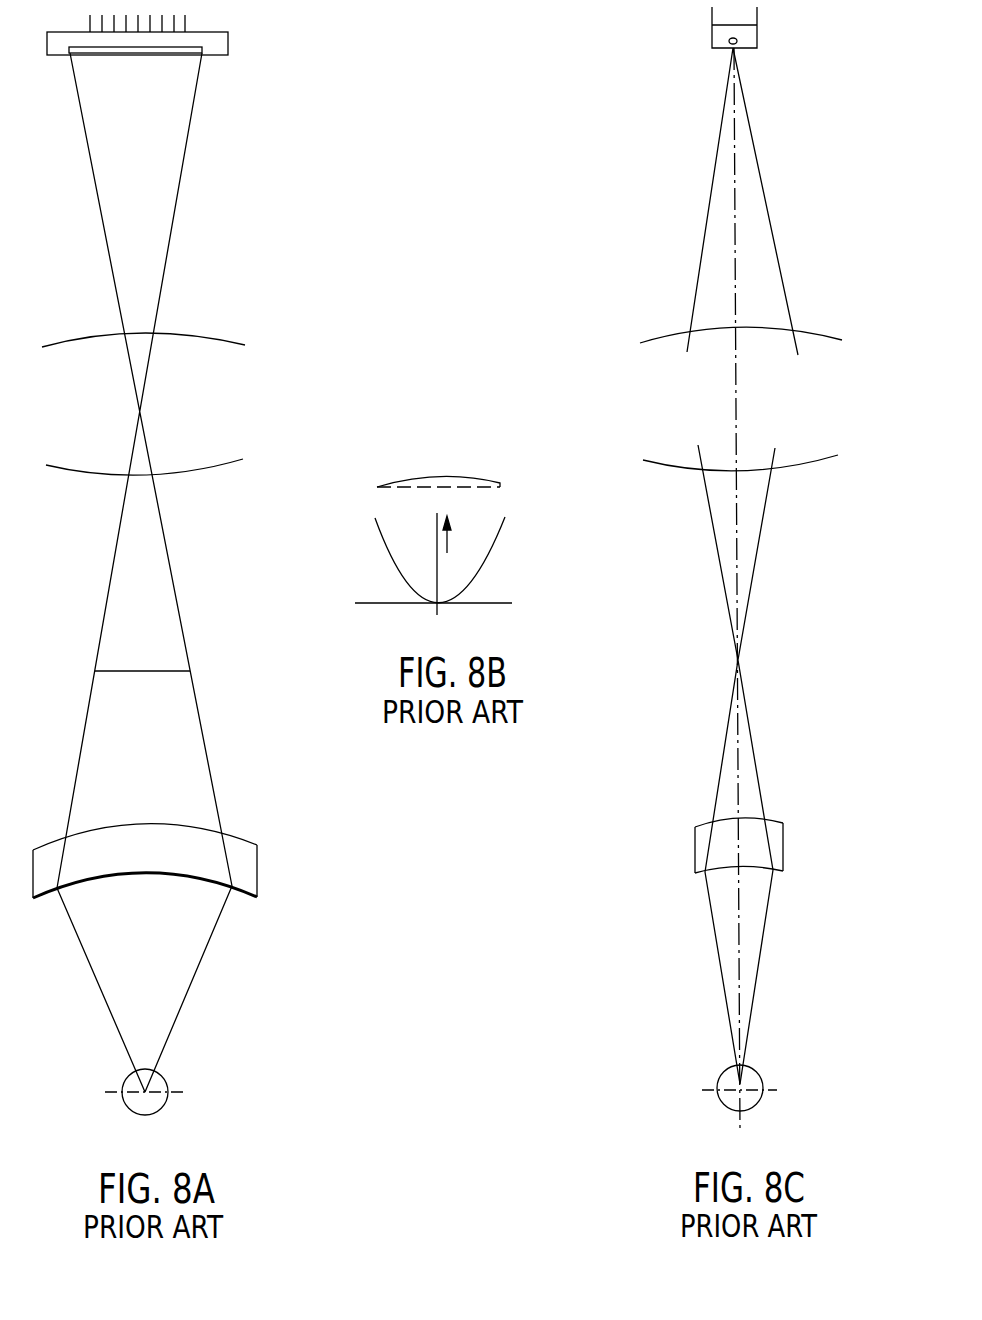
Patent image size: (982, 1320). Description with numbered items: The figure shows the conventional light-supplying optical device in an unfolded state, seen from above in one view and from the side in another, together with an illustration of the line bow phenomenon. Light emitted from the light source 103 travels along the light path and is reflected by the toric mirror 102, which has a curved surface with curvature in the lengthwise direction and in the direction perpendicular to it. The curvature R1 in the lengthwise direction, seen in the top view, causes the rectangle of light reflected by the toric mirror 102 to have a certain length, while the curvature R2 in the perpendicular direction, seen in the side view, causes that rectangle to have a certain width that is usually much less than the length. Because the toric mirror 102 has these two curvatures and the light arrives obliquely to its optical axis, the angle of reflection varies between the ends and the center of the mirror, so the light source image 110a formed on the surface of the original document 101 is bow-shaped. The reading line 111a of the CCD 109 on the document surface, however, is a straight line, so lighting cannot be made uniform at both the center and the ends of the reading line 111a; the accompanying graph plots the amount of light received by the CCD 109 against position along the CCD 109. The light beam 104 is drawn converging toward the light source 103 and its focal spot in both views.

In FIG. 8A, the CCD 109 is at (218, 50).
In FIG. 8C, the CCD 109 is at (712, 40).
In FIG. 8A, the original document 101 is at (190, 670).
In FIG. 8C, the original document 101 is at (737, 667).
In FIG. 8A, the toric mirror 102 is at (248, 867).
In FIG. 8C, the toric mirror 102 is at (703, 855).
In FIG. 8A, the curvature in the lengthwise direction R1 is at (240, 897).
In FIG. 8C, the curvature in the direction perpendicular to the lengthwise direction R2 is at (780, 873).
In FIG. 8A, the light beam 104 is at (194, 978).
In FIG. 8C, the light beam 104 is at (720, 973).
In FIG. 8A, the light source 103 is at (158, 1082).
In FIG. 8C, the light source 103 is at (722, 1077).
In FIG. 8B, the light source image 110a is at (438, 478).
In FIG. 8B, the reading line 111a is at (478, 487).